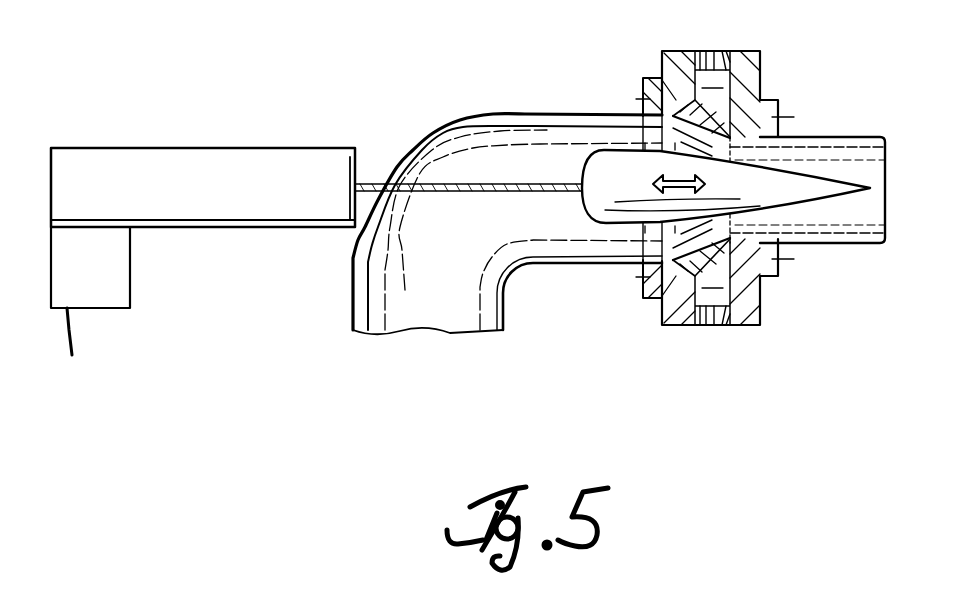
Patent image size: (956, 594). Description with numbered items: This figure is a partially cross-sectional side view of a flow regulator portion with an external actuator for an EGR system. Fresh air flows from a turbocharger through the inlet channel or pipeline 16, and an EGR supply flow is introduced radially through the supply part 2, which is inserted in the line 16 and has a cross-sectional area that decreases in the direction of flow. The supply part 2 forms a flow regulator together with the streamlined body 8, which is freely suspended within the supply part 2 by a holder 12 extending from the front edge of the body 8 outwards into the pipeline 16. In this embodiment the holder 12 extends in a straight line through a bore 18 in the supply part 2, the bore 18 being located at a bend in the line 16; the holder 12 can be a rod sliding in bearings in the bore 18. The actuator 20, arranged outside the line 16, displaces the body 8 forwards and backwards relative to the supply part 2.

The supply part 2 is at (670, 336).
The streamlined body 8 is at (792, 193).
The holder 12 is at (468, 197).
The inlet channel or pipeline 16 is at (551, 96).
The bore 18 is at (394, 190).
The actuator 20 is at (190, 296).